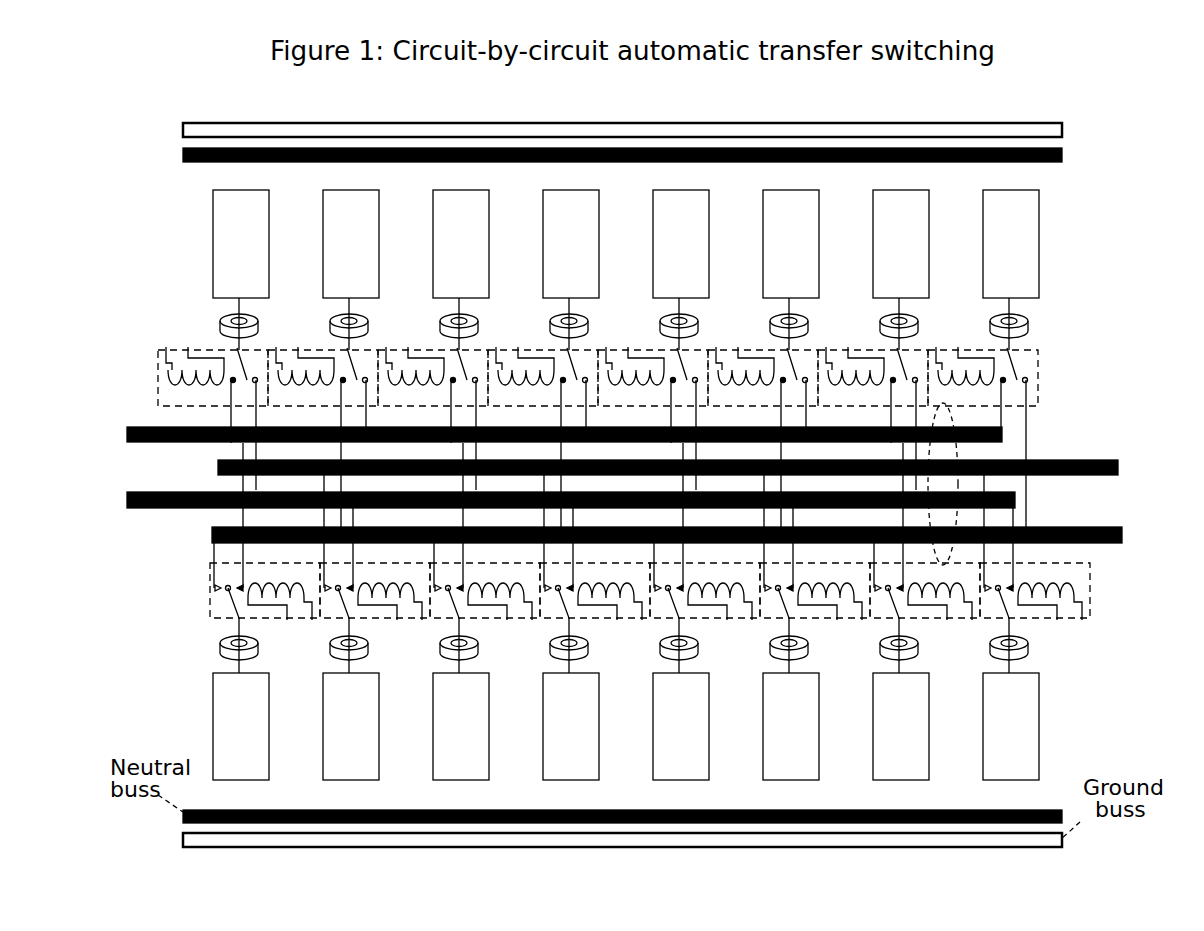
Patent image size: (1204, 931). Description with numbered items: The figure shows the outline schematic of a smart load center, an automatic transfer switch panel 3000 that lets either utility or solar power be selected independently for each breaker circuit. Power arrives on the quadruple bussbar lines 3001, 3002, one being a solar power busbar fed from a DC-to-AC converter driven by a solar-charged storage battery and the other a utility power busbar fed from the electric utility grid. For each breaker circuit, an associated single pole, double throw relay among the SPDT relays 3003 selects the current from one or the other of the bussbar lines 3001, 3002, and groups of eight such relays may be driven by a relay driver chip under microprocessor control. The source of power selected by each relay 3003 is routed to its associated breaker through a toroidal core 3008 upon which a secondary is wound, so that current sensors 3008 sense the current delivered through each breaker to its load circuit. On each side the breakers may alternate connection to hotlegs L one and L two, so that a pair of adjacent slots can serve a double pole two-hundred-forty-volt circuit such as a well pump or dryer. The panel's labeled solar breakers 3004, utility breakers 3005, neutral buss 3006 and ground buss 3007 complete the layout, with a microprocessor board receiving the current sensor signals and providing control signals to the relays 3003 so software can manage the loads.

The smart transfer panel 3000 is at (955, 452).
The quadruple bussbar line 3001 is at (552, 467).
The quadruple bussbar line 3002 is at (691, 501).
The SPDT relays 3003 is at (1035, 403).
The normally solar circuit breakers 3004 is at (1100, 280).
The normally utility circuit breakers 3005 is at (150, 735).
The neutral buss 3006 is at (803, 150).
The ground buss 3007 is at (450, 126).
The current sensors 3008 is at (220, 316).